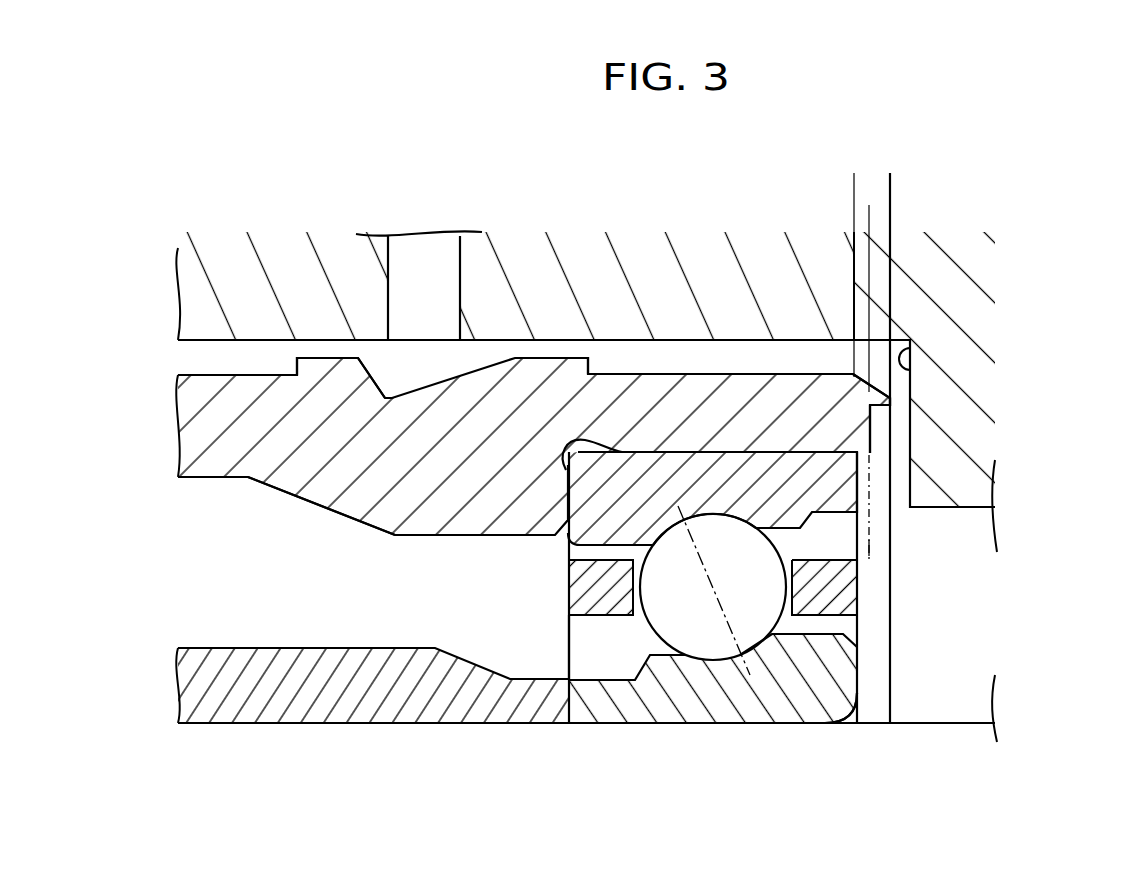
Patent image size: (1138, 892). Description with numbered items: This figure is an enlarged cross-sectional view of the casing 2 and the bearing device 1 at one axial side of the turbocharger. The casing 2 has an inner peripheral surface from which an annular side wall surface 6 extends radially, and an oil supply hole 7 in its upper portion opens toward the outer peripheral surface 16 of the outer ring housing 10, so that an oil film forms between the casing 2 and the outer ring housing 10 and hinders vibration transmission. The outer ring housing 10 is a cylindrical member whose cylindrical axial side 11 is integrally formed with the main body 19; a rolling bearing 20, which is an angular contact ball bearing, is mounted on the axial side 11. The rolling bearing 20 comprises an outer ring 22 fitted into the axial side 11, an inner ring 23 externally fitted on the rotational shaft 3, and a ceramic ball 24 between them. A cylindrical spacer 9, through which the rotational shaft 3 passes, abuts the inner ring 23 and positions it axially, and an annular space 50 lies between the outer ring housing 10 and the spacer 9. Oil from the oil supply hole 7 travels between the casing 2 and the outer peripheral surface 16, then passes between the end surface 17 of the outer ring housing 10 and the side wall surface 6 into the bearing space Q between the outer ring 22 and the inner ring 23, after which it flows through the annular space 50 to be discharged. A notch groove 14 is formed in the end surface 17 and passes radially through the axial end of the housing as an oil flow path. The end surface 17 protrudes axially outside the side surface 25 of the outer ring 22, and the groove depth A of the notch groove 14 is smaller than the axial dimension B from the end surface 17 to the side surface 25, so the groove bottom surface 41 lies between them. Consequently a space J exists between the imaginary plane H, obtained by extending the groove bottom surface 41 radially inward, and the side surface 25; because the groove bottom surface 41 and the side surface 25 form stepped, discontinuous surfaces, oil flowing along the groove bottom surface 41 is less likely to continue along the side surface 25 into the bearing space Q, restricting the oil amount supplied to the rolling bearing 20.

The bearing device 1 is at (577, 350).
The casing 2 is at (233, 224).
The rotational shaft 3 is at (950, 725).
The side wall surface 6 is at (920, 351).
The oil supply hole 7 is at (455, 236).
The spacer 9 is at (214, 660).
The outer ring housing 10 is at (323, 350).
The axial side 11 is at (700, 400).
The notch groove 14 is at (880, 422).
The outer peripheral surface 16 is at (546, 355).
The end surface 17 is at (893, 446).
The main body 19 is at (292, 480).
The rolling bearing 20 is at (870, 674).
The outer ring 22 is at (760, 480).
The inner ring 23 is at (626, 715).
The ball 24 is at (722, 652).
The side surface 25 is at (860, 480).
The groove bottom surface 41 is at (880, 396).
The annular space 50 is at (340, 618).
The groove depth A is at (826, 212).
The axial dimension B is at (935, 183).
The imaginary plane H is at (878, 524).
The space J is at (869, 552).
The bearing space Q is at (560, 640).